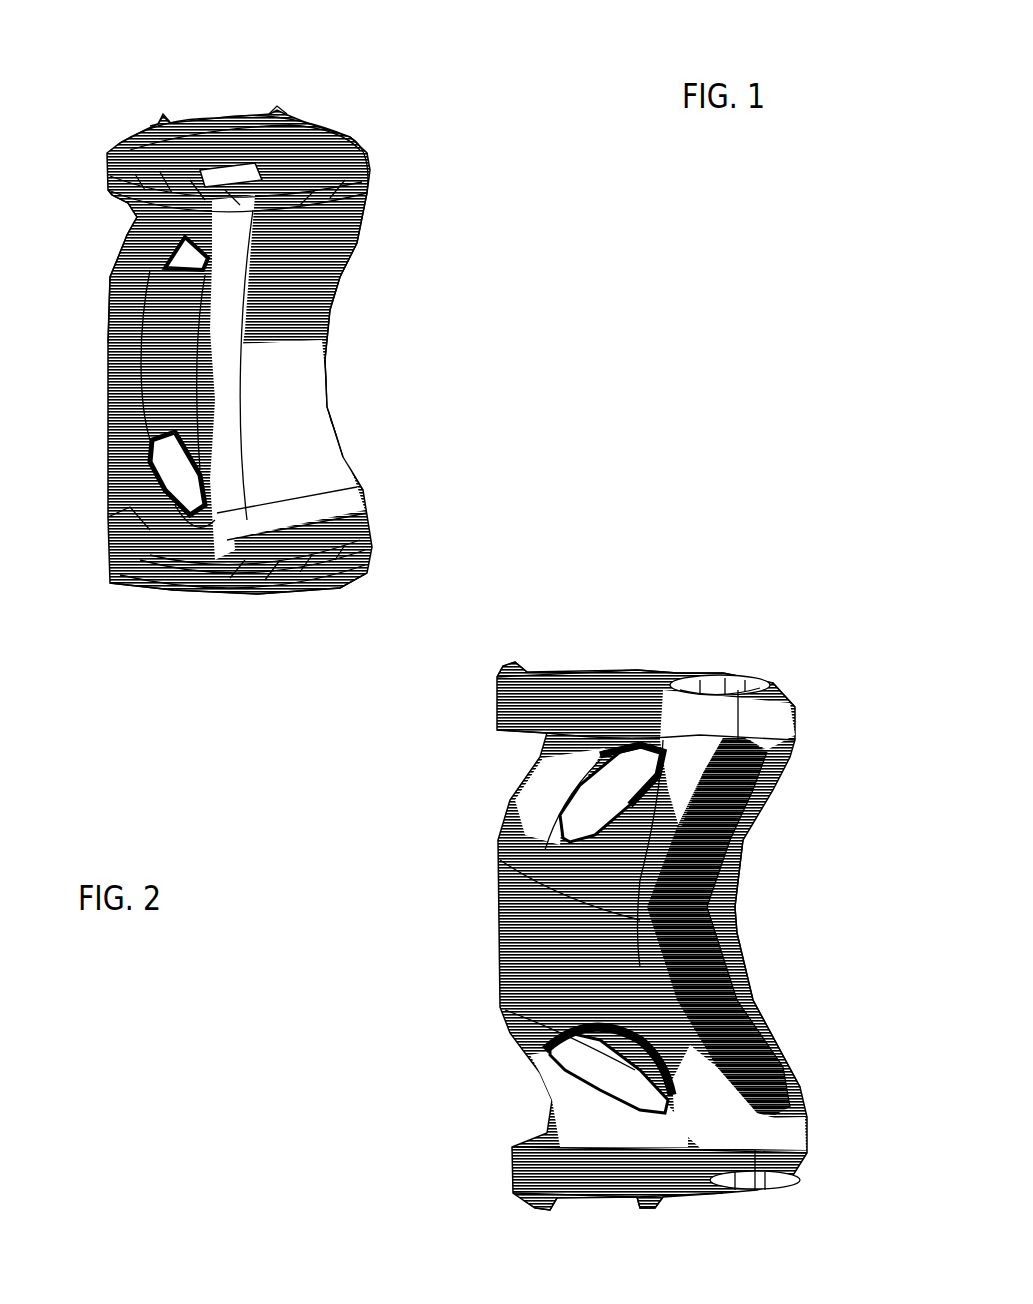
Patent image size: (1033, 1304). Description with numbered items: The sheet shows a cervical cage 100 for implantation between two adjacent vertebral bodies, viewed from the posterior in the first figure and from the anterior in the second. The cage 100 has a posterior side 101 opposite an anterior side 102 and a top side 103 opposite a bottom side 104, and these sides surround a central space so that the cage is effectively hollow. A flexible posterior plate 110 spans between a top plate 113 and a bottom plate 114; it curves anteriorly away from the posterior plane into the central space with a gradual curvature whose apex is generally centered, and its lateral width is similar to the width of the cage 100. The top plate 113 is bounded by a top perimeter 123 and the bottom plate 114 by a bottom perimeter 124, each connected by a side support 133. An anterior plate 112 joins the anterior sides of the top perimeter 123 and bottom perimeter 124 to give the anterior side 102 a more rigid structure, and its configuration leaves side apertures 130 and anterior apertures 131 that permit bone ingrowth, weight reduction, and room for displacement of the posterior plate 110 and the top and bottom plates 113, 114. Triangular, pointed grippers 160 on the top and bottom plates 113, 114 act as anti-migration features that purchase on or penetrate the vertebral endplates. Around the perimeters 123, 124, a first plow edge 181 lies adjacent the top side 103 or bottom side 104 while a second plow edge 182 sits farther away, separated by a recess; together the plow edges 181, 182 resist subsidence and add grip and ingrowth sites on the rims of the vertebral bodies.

In FIG. 1, the cervical cage 100 is at (540, 262).
In FIG. 2, the cervical cage 100 is at (805, 598).
In FIG. 1, the posterior side 101 is at (340, 400).
In FIG. 1, the anterior side 102 is at (95, 337).
In FIG. 1, the top side 103 is at (220, 100).
In FIG. 1, the bottom side 104 is at (150, 608).
In FIG. 1, the flexible posterior plate 110 is at (295, 340).
In FIG. 2, the flexible posterior plate 110 is at (745, 970).
In FIG. 2, the anterior plate 112 is at (500, 930).
In FIG. 1, the top plate 113 is at (300, 120).
In FIG. 2, the top plate 113 is at (758, 670).
In FIG. 1, the bottom plate 114 is at (260, 590).
In FIG. 2, the bottom plate 114 is at (590, 1200).
In FIG. 2, the top perimeter 123 is at (783, 725).
In FIG. 2, the bottom perimeter 124 is at (800, 1152).
In FIG. 1, the side aperture 130 is at (165, 460).
In FIG. 2, the side aperture 130 is at (750, 905).
In FIG. 1, the anterior aperture 131 is at (122, 222).
In FIG. 2, the anterior aperture 131 is at (523, 762).
In FIG. 2, the side support 133 is at (680, 800).
In FIG. 1, the gripper 160 is at (163, 114).
In FIG. 2, the gripper 160 is at (530, 662).
In FIG. 1, the first plow edge 181 is at (350, 155).
In FIG. 2, the first plow edge 181 is at (718, 682).
In FIG. 1, the second plow edge 182 is at (372, 188).